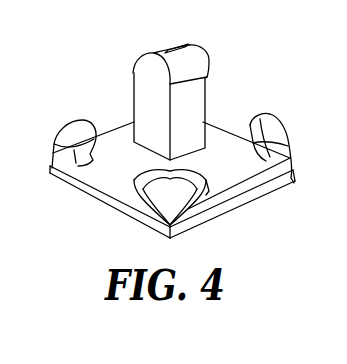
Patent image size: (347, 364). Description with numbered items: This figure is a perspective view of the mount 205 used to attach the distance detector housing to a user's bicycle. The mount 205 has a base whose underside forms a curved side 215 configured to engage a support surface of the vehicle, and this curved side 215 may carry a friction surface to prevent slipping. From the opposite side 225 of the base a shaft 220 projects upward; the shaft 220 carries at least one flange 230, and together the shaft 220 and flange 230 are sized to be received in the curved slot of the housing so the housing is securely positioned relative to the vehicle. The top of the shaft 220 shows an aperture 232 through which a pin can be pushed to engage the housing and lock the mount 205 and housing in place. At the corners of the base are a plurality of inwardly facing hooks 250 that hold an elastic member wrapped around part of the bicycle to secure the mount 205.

The mount 205 is at (190, 147).
The curved side 215 is at (112, 200).
The shaft 220 is at (208, 90).
The side of the base 225 is at (221, 163).
The flange 230 is at (208, 53).
The aperture 232 is at (174, 50).
The inwardly facing hooks 250 is at (87, 128).